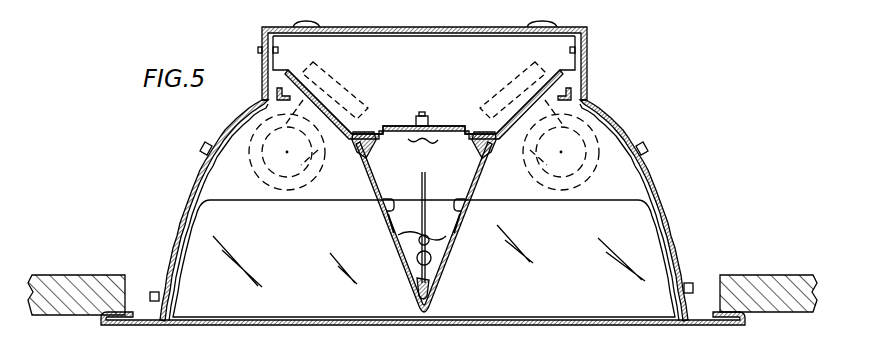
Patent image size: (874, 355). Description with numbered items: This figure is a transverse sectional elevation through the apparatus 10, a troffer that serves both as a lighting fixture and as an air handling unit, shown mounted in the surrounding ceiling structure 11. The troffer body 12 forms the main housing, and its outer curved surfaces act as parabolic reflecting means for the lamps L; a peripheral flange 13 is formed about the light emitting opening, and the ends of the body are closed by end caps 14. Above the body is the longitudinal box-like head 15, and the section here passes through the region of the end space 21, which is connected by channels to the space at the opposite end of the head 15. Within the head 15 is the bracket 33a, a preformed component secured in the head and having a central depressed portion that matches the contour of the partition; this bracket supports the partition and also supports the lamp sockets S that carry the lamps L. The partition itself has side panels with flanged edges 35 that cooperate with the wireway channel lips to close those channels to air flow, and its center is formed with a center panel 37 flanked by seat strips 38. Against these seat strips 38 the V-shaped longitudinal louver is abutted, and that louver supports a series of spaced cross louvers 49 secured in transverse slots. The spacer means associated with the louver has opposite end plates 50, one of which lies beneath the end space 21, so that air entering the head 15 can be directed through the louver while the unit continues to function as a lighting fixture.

The apparatus 10 is at (645, 141).
The ceiling panel 11 is at (786, 312).
The troffer body 12 is at (205, 184).
The peripheral flange 13 is at (714, 314).
The end cap 14 is at (672, 228).
The box-like head 15 is at (588, 63).
The space 21 is at (391, 81).
The bracket 33a is at (292, 69).
The flanged edge 35 is at (590, 82).
The center panel 37 is at (404, 125).
The seat strip 38 is at (366, 132).
The cross louver 49 is at (582, 316).
The end plate 50 is at (410, 141).
The lamp socket S is at (338, 73).
The lamp L is at (262, 168).